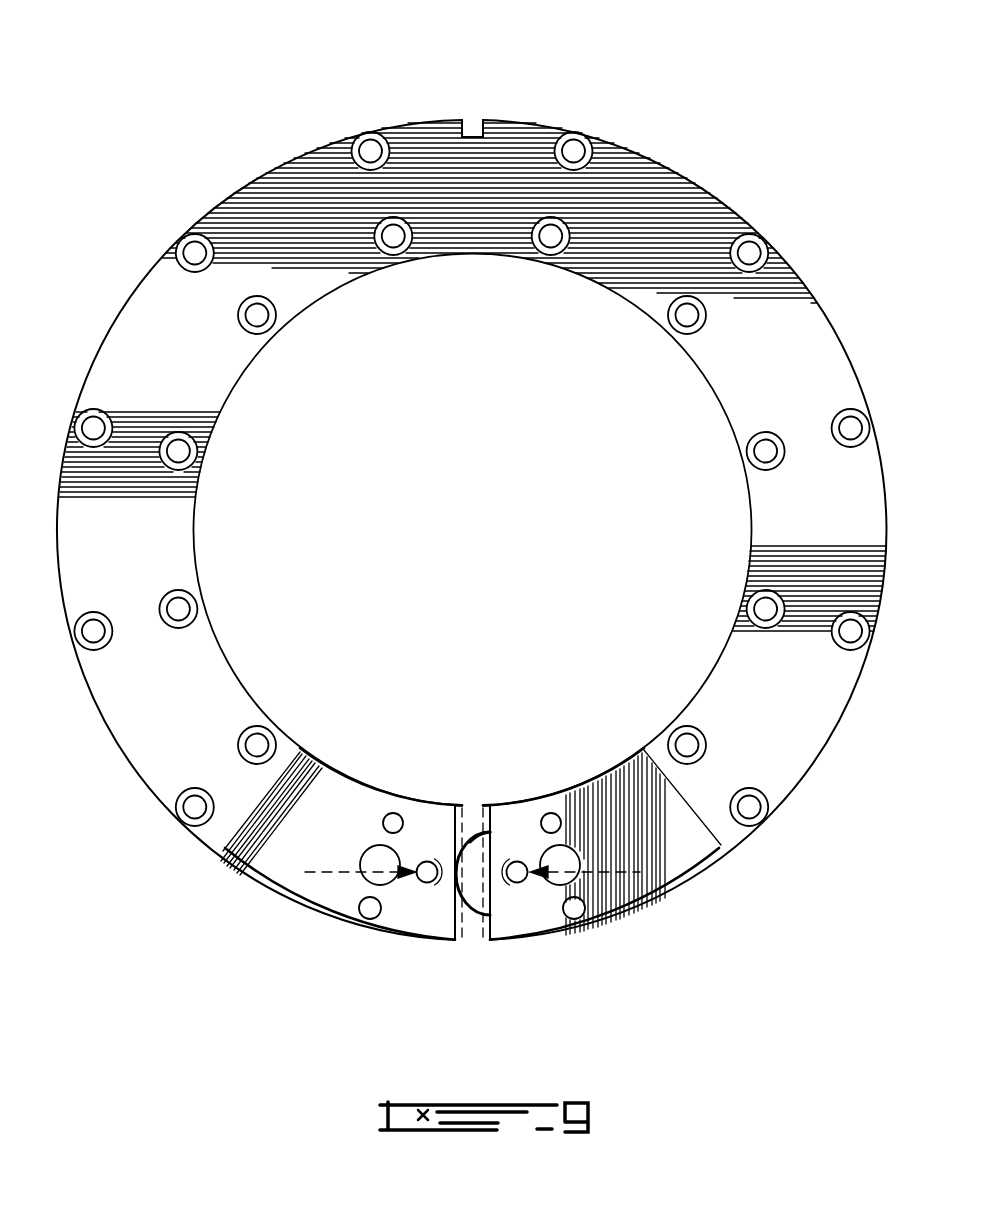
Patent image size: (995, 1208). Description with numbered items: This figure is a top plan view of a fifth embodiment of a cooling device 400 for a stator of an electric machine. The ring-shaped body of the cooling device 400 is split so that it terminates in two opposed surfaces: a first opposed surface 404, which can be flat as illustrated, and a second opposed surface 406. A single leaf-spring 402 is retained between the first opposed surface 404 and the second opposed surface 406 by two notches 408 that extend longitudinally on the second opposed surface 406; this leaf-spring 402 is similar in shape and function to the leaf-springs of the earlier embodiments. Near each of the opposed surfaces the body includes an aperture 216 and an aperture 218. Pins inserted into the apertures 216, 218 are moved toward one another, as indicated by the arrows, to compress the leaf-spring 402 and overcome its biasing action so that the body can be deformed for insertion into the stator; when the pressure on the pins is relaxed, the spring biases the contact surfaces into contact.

The cooling device 400 is at (124, 174).
The aperture 216 is at (418, 866).
The aperture 218 is at (522, 867).
The leaf-spring 402 is at (468, 830).
The first opposed surface 404 is at (467, 940).
The second opposed surface 406 is at (477, 940).
The notch 408 is at (488, 830).